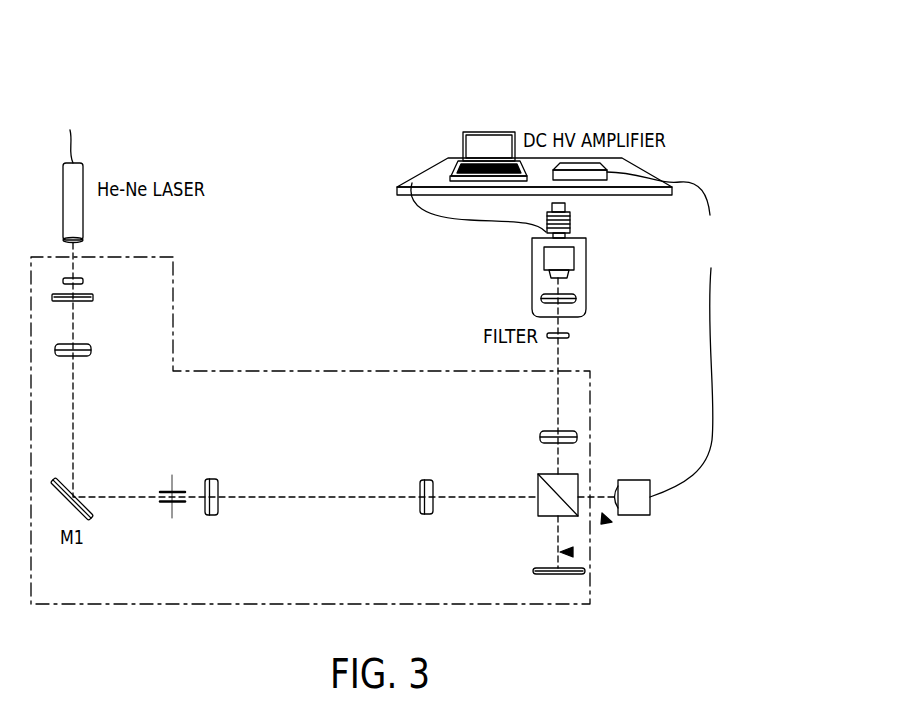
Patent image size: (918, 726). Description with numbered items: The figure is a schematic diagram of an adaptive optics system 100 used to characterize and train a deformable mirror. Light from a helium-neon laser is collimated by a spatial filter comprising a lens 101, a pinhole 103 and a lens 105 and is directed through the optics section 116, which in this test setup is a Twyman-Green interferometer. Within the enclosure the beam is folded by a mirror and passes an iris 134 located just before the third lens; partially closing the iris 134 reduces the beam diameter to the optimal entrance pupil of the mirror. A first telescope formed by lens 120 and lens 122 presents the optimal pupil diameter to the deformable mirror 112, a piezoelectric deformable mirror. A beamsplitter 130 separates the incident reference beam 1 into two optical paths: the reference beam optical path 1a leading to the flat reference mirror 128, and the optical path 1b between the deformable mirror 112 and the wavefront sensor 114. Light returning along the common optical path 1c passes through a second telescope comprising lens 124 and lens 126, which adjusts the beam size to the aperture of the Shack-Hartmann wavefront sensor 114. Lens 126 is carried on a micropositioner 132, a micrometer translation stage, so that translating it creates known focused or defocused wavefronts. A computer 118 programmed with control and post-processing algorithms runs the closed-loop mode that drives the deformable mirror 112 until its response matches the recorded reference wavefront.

The adaptive optics system 100 is at (282, 179).
The lens 101 is at (80, 279).
The pinhole 103 is at (93, 299).
The lens 105 is at (80, 357).
The deformable mirror 112 is at (652, 505).
The wavefront sensor 114 is at (544, 262).
The optics section 116 is at (595, 378).
The computer 118 is at (463, 140).
The lens 120 is at (218, 486).
The lens 122 is at (433, 486).
The lens 124 is at (540, 436).
The lens 126 is at (576, 300).
The reference mirror 128 is at (533, 571).
The beamsplitter 130 is at (573, 472).
The micropositioner 132 is at (586, 250).
The iris 134 is at (172, 490).
The reference beam 1 is at (554, 543).
The reference beam optical path 1a is at (573, 552).
The optical path between DM and WFS 1b is at (607, 520).
The common optical path 1c is at (337, 490).